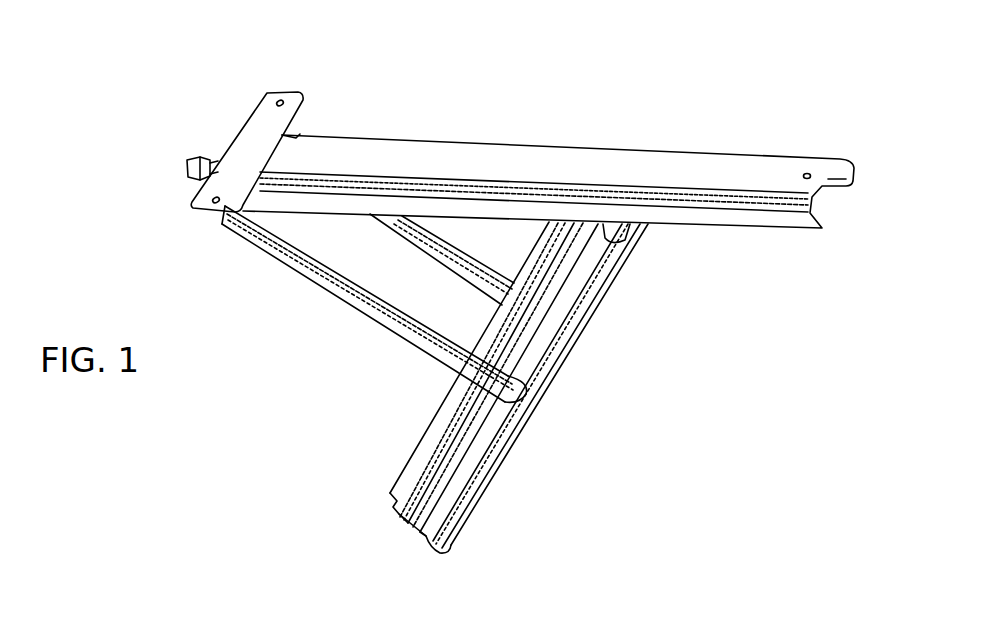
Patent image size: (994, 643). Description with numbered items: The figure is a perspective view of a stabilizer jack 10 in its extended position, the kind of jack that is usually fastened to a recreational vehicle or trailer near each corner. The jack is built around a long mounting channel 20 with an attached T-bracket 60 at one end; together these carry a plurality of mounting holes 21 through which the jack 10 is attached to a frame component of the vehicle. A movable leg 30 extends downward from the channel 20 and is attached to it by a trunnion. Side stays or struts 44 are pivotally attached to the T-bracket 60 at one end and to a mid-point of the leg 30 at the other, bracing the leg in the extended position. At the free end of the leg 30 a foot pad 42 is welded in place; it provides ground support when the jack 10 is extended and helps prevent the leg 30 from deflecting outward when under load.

The stabilizer jack 10 is at (530, 82).
The channel 20 is at (692, 160).
The mounting holes 21 is at (809, 173).
The movable leg 30 is at (557, 333).
The foot pad 42 is at (447, 548).
The struts 44 is at (427, 250).
The T-bracket 60 is at (258, 108).